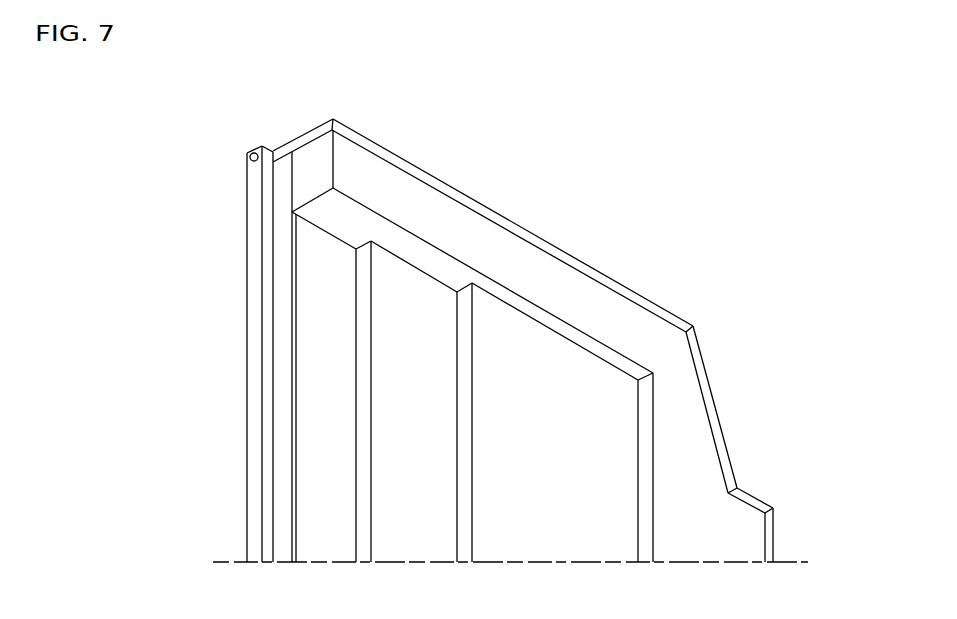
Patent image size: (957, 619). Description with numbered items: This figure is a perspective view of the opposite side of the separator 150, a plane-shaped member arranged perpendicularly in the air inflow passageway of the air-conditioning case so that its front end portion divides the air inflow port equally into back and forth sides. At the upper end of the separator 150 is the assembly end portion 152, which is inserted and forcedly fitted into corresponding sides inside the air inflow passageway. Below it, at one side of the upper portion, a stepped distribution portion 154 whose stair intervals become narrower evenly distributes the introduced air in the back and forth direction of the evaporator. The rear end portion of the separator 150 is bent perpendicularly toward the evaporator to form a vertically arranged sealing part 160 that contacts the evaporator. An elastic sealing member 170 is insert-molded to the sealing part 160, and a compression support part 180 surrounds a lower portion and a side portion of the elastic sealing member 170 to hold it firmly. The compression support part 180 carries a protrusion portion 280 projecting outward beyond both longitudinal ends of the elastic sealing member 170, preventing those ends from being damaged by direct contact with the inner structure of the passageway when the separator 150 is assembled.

The separator 150 is at (700, 418).
The assembly end portion 152 is at (644, 297).
The stepped distribution portion 154 is at (522, 350).
The sealing part 160 is at (240, 390).
The elastic sealing member 170 is at (247, 268).
The compression support part 180 is at (277, 176).
The protrusion portion 280 is at (250, 154).